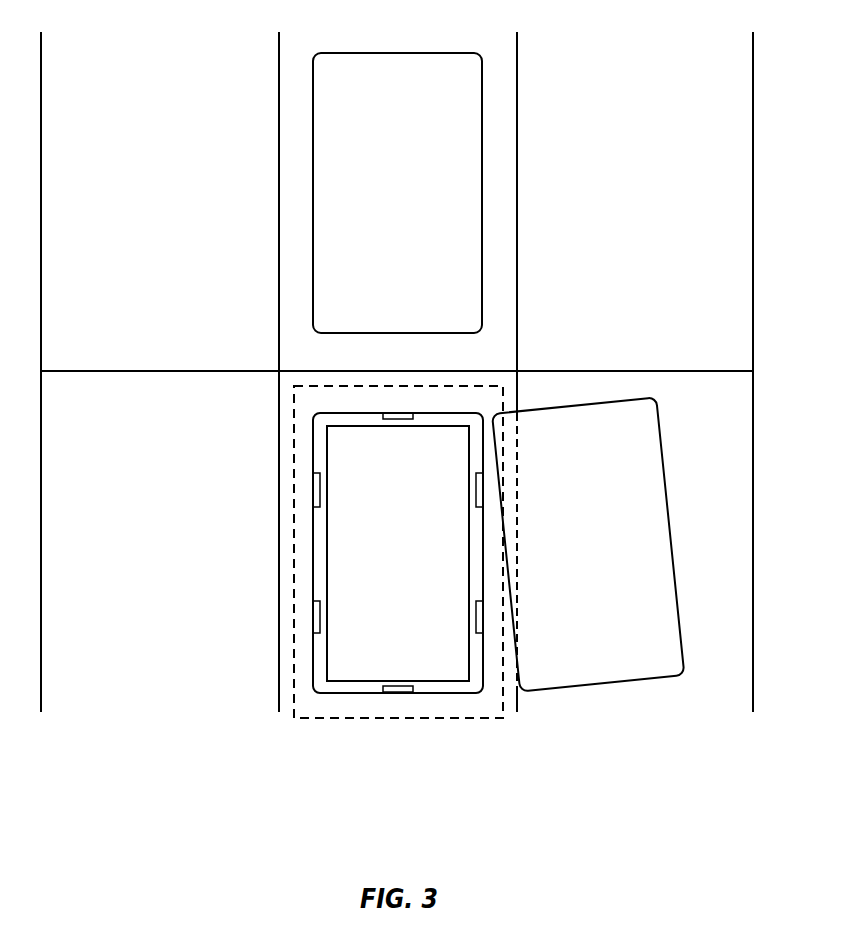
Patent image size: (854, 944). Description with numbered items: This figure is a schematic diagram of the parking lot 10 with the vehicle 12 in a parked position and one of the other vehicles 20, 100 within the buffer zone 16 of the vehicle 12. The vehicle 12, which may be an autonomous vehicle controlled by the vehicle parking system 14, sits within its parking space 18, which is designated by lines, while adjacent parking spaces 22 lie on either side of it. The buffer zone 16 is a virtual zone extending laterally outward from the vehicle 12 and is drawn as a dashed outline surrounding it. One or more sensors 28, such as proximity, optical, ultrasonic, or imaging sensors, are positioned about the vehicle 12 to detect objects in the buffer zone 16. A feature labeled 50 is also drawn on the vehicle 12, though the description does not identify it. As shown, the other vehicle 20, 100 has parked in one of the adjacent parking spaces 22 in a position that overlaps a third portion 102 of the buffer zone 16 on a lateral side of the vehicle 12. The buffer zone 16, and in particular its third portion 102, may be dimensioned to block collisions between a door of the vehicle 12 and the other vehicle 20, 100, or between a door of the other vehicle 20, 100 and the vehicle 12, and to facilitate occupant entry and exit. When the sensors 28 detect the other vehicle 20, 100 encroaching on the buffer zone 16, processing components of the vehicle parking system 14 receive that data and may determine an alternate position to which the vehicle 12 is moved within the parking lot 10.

The parking lot 10 is at (108, 38).
The vehicle 12 is at (366, 609).
The vehicle parking system 14 is at (368, 812).
The buffer zone 16 is at (387, 718).
The parking space 18 is at (289, 384).
The other vehicles 20 is at (397, 53).
The adjacent parking spaces 22 is at (305, 308).
The sensors 28 is at (398, 419).
The cavity 50 is at (327, 651).
The other vehicle 100 is at (600, 688).
The third portion of the buffer zone 102 is at (507, 405).